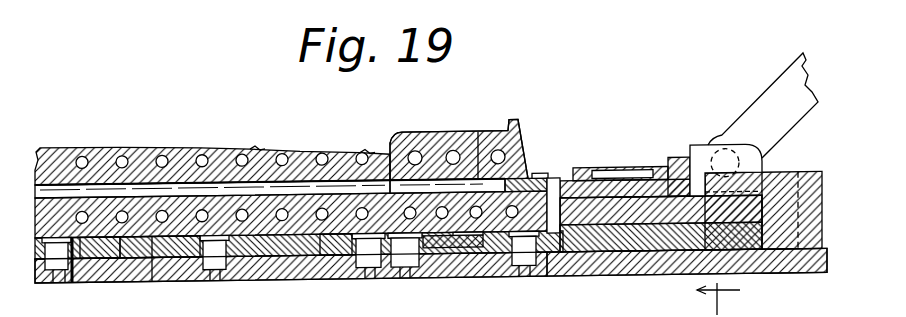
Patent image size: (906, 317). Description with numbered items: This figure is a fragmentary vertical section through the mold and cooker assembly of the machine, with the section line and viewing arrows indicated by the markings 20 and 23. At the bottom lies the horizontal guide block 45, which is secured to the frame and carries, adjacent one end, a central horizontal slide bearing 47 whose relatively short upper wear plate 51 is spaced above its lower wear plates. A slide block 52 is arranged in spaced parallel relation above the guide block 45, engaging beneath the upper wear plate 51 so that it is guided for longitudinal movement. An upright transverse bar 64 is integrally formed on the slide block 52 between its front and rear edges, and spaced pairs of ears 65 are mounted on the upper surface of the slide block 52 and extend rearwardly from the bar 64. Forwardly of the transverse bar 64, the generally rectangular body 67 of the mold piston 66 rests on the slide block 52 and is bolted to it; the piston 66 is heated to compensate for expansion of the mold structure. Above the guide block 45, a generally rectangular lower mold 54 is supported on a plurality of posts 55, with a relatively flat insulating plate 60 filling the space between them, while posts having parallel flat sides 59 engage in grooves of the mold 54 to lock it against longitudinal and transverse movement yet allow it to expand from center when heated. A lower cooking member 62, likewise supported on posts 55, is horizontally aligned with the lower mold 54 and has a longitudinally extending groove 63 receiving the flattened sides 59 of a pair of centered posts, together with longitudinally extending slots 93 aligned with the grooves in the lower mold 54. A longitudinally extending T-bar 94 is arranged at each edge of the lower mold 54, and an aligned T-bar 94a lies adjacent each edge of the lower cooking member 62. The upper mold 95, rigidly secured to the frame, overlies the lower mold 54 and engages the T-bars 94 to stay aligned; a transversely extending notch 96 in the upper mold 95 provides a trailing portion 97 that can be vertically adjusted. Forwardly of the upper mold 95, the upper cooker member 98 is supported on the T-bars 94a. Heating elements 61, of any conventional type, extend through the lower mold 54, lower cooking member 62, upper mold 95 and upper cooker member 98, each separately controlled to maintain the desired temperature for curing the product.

The section line 20 is at (52, 192).
The upper cooker member 98 is at (84, 157).
The longitudinally extending slots 93 is at (170, 185).
The T-bar 94a is at (192, 185).
The T-bar 94 is at (433, 178).
The heating elements 61 is at (258, 152).
The trailing portion 97 is at (393, 148).
The transversely extending notch 96 is at (479, 133).
The upper mold 95 is at (493, 132).
The lower mold 54 is at (543, 174).
The mold piston 66 is at (597, 163).
The body 67 is at (617, 171).
The upright transverse bar 64 is at (677, 158).
The ears 65 is at (693, 145).
The upper wear plate 51 is at (661, 237).
The flat sides 59 is at (60, 287).
The posts 55 is at (214, 282).
The insulating plate 60 is at (421, 278).
The longitudinally extending groove 63 is at (100, 281).
The lower cooking member 62 is at (147, 281).
The horizontal guide block 45 is at (284, 281).
The slide block 52 is at (587, 274).
The central horizontal slide bearing 47 is at (647, 271).
The section arrow 23 is at (714, 299).